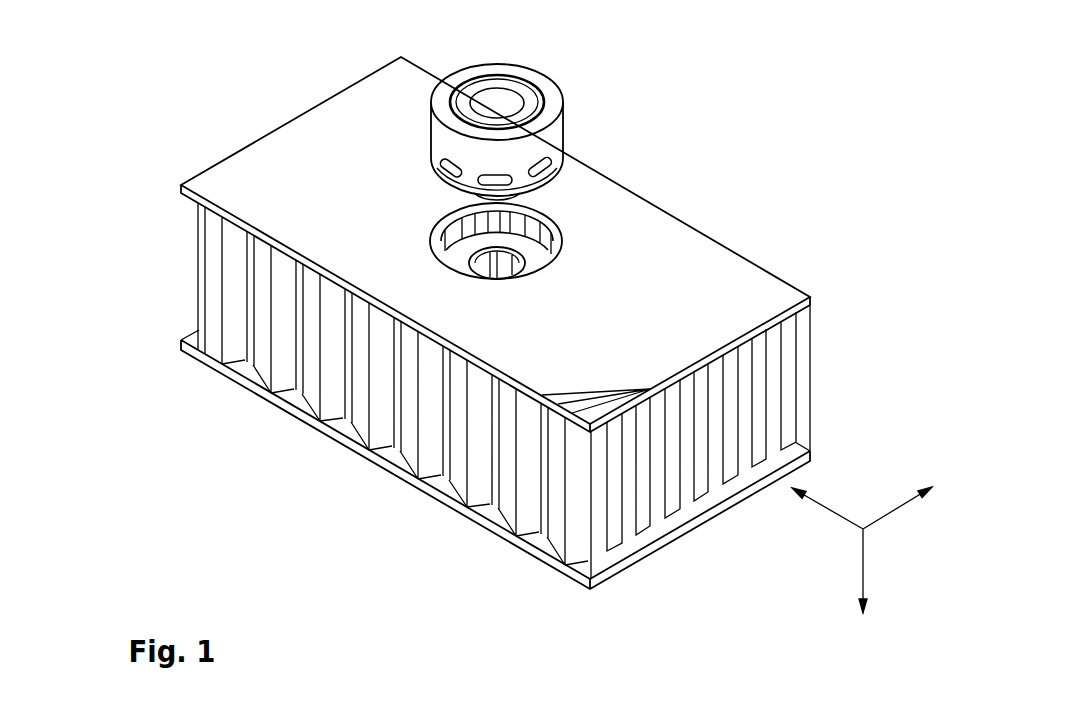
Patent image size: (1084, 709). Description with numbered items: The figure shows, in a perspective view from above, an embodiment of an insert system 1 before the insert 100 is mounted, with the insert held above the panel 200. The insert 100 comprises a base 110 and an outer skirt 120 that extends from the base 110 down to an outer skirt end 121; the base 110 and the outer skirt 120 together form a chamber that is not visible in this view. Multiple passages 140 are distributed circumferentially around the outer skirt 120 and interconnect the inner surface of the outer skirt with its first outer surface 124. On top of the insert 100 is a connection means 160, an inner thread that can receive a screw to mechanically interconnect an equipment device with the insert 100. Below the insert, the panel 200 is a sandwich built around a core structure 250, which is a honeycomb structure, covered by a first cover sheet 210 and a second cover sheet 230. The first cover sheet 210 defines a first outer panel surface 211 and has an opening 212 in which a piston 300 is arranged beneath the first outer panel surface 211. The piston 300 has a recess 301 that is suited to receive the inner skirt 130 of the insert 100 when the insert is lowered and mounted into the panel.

The insert system 1 is at (138, 100).
The insert 100 is at (588, 100).
The base 110 is at (547, 90).
The outer skirt 120 is at (563, 140).
The outer skirt end 121 is at (548, 183).
The first outer surface 124 is at (520, 158).
The inner skirt 130 is at (508, 207).
The passages 140 is at (552, 167).
The connection means 160 is at (483, 102).
The panel 200 is at (355, 485).
The first cover sheet 210 is at (813, 297).
The first outer panel surface 211 is at (596, 388).
The opening 212 is at (435, 217).
The second cover sheet 230 is at (283, 406).
The core structure 250 is at (203, 280).
The piston 300 is at (453, 257).
The recess 301 is at (522, 270).